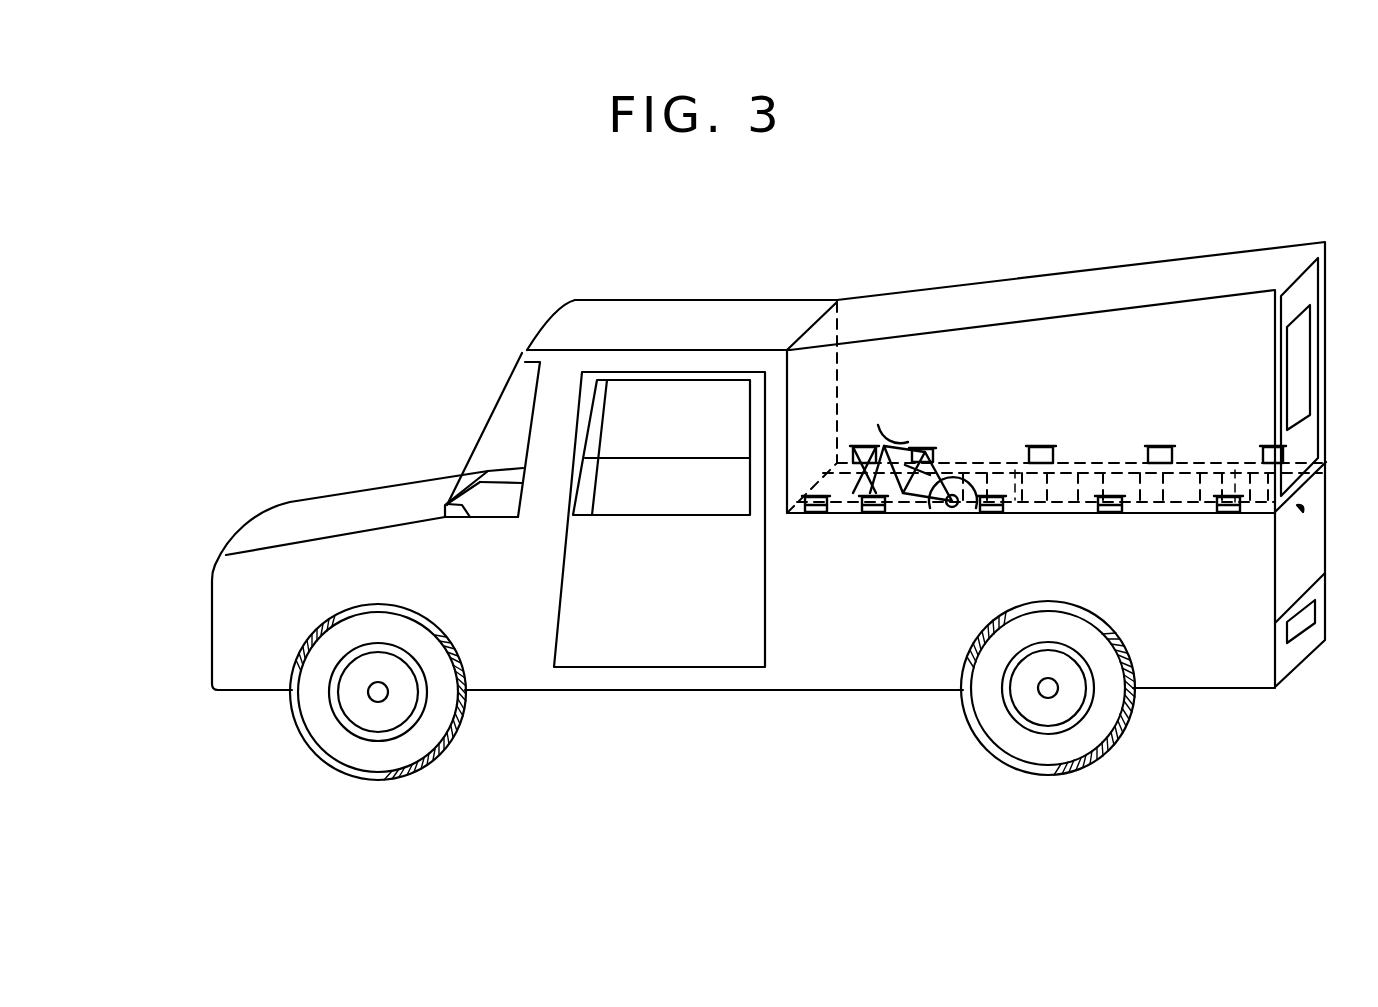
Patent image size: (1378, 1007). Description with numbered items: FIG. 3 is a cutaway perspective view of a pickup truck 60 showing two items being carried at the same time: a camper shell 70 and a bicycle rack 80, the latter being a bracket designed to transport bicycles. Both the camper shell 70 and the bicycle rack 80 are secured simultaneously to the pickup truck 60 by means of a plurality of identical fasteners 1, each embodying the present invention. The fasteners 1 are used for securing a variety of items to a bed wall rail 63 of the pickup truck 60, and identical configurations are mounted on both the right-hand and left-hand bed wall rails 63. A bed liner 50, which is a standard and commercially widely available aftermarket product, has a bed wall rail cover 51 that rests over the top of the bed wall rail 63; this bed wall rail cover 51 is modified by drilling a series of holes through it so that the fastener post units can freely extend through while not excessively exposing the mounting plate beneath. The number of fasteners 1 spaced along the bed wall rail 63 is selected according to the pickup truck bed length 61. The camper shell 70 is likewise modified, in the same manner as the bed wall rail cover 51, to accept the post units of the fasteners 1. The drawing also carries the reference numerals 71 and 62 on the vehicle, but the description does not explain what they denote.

The pickup truck 60 is at (422, 452).
The camper shell 70 is at (1043, 292).
The bicycle rack 80 is at (843, 462).
The fastener 1 is at (868, 515).
The bed liner 50 is at (1260, 493).
The bed wall rail cover 51 is at (1015, 470).
The bed wall rail 63 is at (1230, 493).
The support posts 71 is at (1052, 493).
The pickup truck bed length 61 is at (875, 595).
The side wall 62 is at (937, 603).